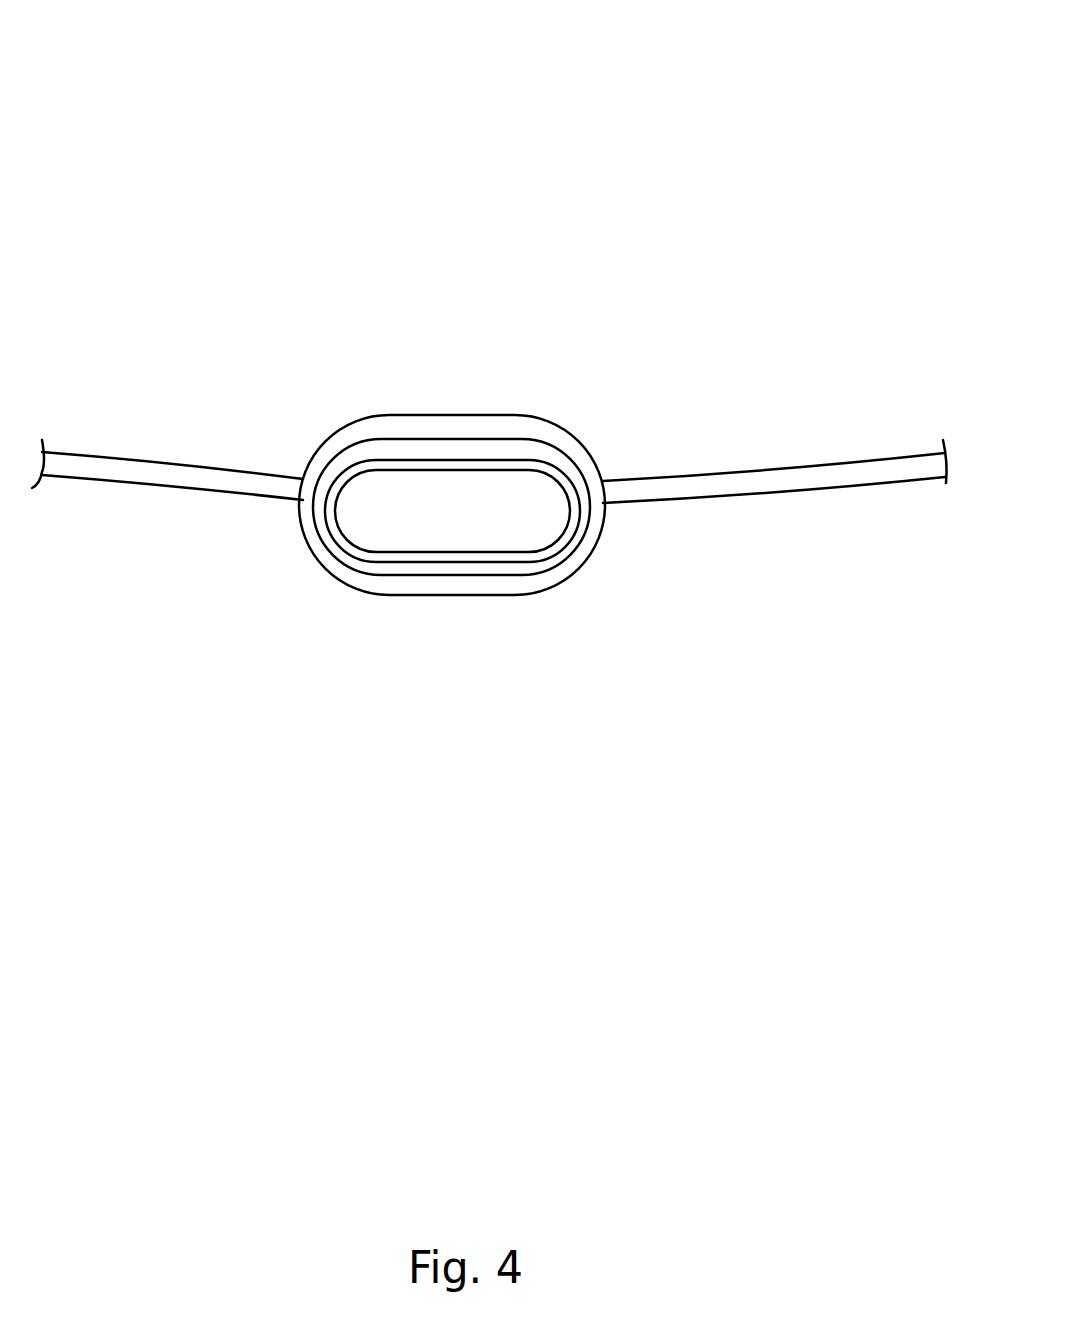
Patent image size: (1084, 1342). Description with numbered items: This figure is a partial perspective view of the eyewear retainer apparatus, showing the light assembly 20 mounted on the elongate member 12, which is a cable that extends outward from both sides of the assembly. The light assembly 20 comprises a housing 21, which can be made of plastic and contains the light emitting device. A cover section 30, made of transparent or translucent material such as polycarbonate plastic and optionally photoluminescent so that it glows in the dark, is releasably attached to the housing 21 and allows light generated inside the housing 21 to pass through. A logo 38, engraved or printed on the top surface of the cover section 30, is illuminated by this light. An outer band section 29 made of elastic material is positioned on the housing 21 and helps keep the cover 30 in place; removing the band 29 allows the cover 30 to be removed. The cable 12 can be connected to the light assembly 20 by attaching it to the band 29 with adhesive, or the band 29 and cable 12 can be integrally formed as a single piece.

The elongate member 12 is at (200, 482).
The light assembly 20 is at (489, 428).
The housing 21 is at (460, 468).
The outer band section 29 is at (370, 427).
The cover section 30 is at (502, 548).
The logo 38 is at (368, 537).